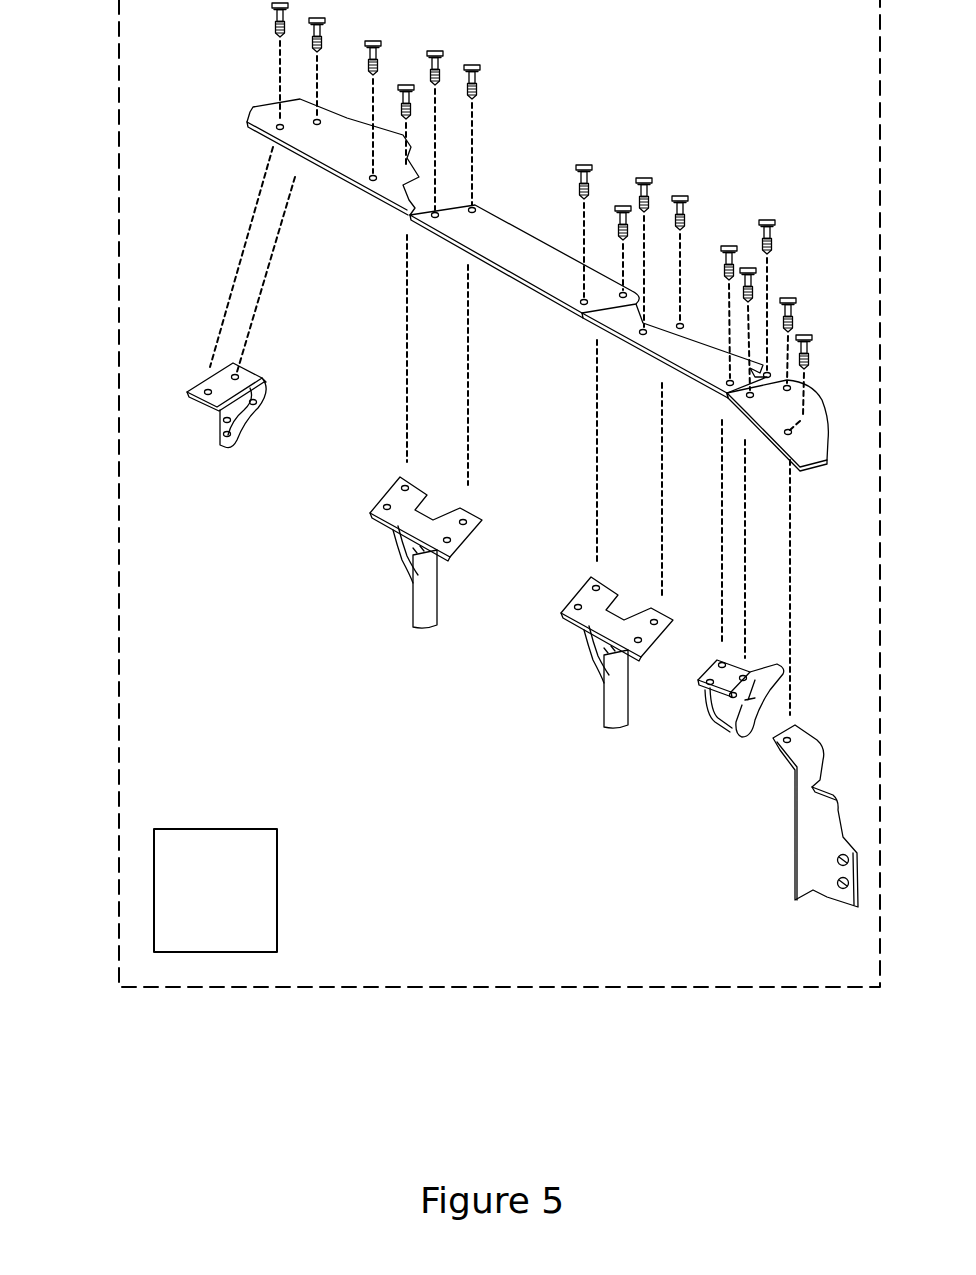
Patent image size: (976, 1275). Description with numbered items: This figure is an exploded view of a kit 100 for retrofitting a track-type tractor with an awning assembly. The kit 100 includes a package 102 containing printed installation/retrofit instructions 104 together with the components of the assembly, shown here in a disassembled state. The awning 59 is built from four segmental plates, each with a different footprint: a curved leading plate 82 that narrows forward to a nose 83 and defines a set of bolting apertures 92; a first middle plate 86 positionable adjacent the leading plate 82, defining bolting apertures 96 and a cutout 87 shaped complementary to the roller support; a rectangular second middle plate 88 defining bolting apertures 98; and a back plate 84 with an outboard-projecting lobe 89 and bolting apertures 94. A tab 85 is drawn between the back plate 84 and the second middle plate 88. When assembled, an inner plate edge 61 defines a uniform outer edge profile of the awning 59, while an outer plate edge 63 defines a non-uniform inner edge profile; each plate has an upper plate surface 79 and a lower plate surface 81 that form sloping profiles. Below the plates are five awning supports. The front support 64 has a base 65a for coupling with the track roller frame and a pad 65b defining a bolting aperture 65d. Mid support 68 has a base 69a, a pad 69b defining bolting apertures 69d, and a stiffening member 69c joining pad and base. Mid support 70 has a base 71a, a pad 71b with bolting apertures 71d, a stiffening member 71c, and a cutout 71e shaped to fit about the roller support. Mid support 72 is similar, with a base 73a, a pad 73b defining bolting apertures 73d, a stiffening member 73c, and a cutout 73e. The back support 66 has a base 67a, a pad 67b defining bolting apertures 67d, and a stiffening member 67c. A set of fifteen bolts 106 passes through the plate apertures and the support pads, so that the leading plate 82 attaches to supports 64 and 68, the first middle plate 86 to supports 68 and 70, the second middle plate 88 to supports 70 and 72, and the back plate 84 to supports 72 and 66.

The kit 100 is at (54, 137).
The package 102 is at (119, 282).
The printed installation/retrofit instructions 104 is at (277, 870).
The bolts 106 is at (484, 88).
The awning 59 is at (822, 442).
The inner plate edge 61 is at (654, 336).
The outer plate edge 63 is at (524, 256).
The front support 64 is at (803, 793).
The base 65a is at (822, 800).
The pad 65b is at (812, 745).
The bolting aperture 65d is at (789, 735).
The back support 66 is at (210, 408).
The base 67a is at (240, 432).
The pad 67b is at (206, 390).
The lower holes 67c is at (225, 412).
The bolting apertures 67d is at (238, 375).
The mid support 68 is at (720, 706).
The base 69a is at (740, 740).
The pad 69b is at (716, 670).
The stiffening member 69c is at (732, 726).
The bolting apertures 69d is at (742, 668).
The mid support 70 is at (607, 658).
The base 71a is at (630, 688).
The pad 71b is at (568, 606).
The stiffening member 71c is at (604, 665).
The mounting hole 71d is at (651, 615).
The cutout 71e is at (623, 614).
The mid support 72 is at (413, 558).
The base 73a is at (440, 572).
The pad 73b is at (377, 506).
The stiffening member 73c is at (413, 565).
The bolting apertures 73d is at (460, 515).
The cutout 73e is at (432, 514).
The upper plate surface 79 is at (455, 252).
The lower plate surface 81 is at (488, 312).
The curved leading plate 82 is at (802, 442).
The nose 83 is at (815, 495).
The back plate 84 is at (335, 149).
The connecting tab 85 is at (414, 190).
The first middle plate 86 is at (628, 367).
The cutout 87 is at (652, 325).
The second middle plate 88 is at (548, 288).
The lobe 89 is at (343, 127).
The bolting apertures 92 is at (792, 428).
The bolting apertures 94 is at (278, 128).
The bolting apertures 96 is at (698, 398).
The bolting apertures 98 is at (475, 206).